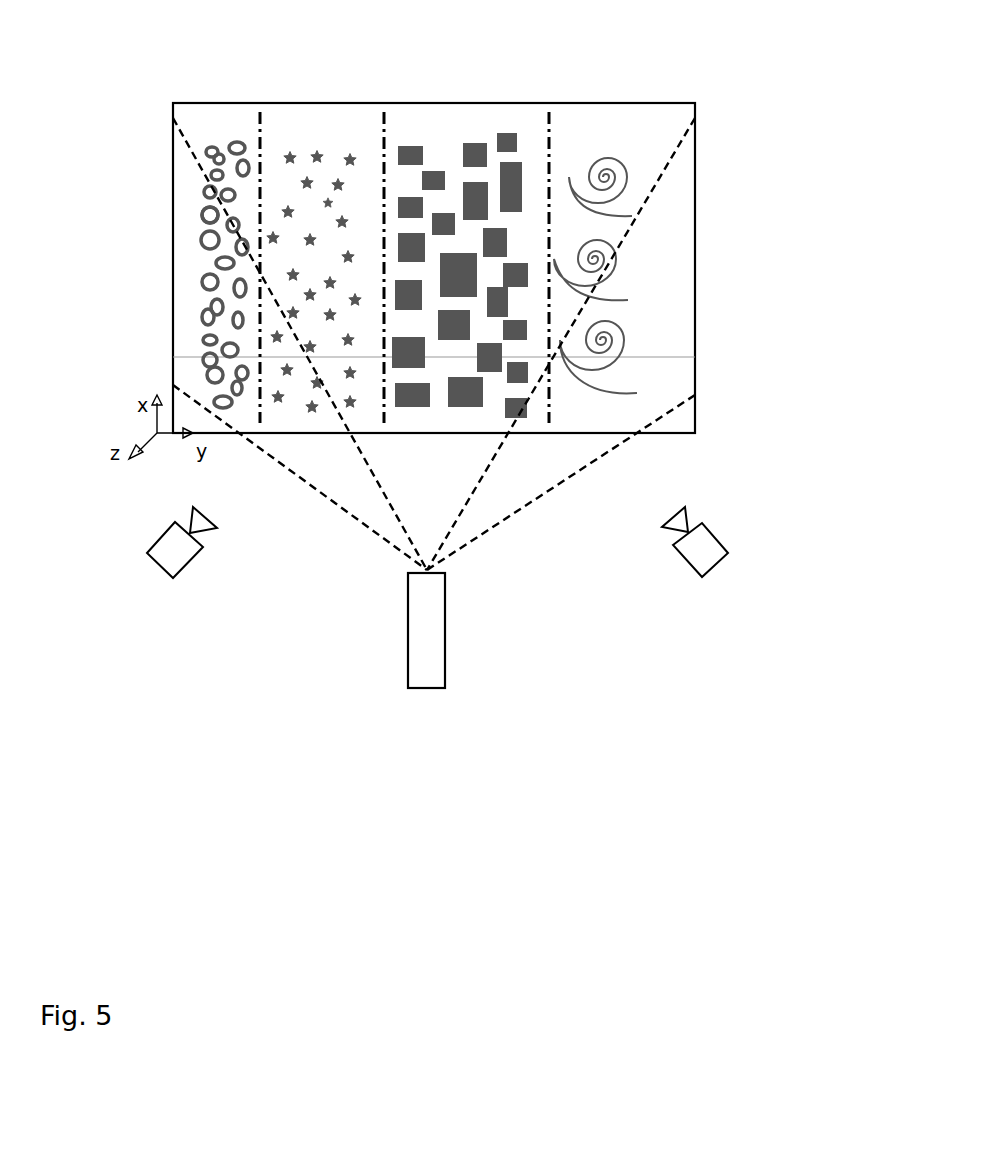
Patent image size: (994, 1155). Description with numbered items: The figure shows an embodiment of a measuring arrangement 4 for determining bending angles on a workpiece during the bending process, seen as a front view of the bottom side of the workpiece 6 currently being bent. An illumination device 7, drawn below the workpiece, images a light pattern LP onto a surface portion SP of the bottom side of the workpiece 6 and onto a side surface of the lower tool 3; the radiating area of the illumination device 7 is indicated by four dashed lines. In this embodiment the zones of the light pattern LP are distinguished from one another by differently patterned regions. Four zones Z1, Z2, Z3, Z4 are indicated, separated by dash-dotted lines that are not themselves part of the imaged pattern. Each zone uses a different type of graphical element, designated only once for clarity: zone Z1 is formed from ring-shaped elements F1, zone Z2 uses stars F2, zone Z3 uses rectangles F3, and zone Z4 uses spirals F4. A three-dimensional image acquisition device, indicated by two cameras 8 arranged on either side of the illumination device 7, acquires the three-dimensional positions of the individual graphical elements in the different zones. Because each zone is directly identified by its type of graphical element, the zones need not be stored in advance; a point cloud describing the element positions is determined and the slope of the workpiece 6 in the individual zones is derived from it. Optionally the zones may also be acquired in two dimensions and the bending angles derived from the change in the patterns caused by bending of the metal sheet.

The zone Z1 is at (258, 98).
The zone Z2 is at (381, 98).
The zone Z3 is at (548, 98).
The zone Z4 is at (694, 98).
The ring-shaped elements F1 is at (200, 280).
The stars F2 is at (320, 154).
The rectangles F3 is at (472, 150).
The spirals F4 is at (600, 152).
The light pattern LP is at (178, 215).
The surface portion SP is at (481, 268).
The workpiece 6 is at (700, 107).
The lower tool 3 is at (700, 363).
The measuring arrangement 4 is at (752, 478).
The illumination device 7 is at (427, 690).
The cameras 8 is at (162, 568).